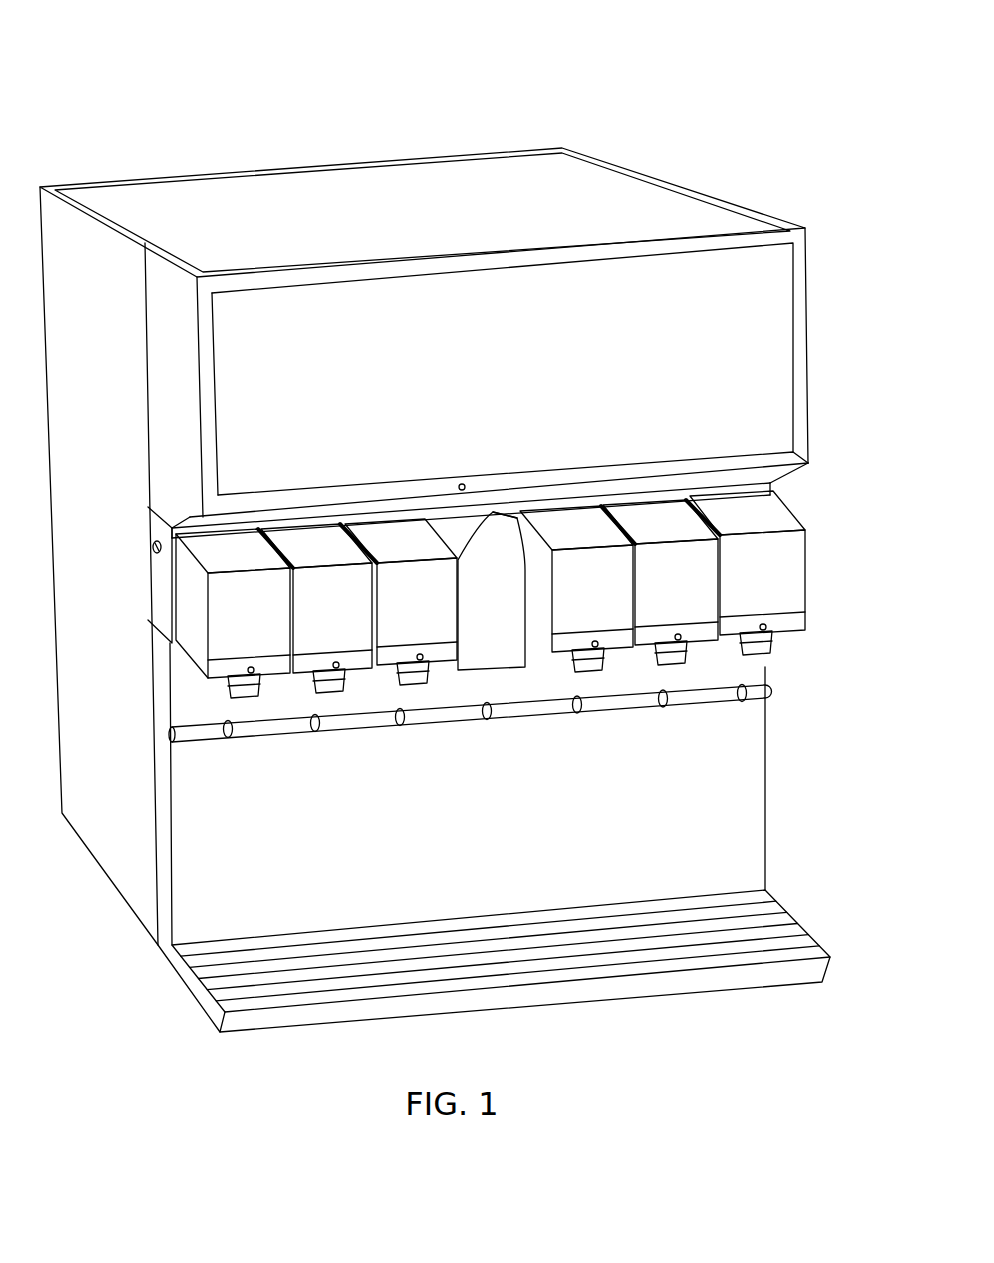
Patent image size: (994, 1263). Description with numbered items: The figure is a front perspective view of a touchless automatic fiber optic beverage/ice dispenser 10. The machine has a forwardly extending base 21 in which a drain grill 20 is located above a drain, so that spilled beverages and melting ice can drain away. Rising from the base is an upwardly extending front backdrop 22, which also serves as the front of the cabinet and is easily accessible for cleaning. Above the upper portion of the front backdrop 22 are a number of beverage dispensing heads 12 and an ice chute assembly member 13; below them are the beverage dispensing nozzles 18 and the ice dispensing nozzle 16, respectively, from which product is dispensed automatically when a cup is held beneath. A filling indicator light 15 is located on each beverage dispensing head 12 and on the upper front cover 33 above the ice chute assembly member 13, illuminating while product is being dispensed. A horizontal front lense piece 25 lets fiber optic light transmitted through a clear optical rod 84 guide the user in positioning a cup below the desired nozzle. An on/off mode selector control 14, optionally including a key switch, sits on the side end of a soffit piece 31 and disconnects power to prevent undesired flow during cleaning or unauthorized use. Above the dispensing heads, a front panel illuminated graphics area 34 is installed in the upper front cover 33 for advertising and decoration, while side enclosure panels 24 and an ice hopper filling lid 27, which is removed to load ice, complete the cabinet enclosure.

The touchless automatic fiber optic beverage/ice dispenser 10 is at (642, 92).
The beverage dispensing head 12 is at (249, 552).
The ice chute assembly member 13 is at (463, 530).
The on/off mode selector control 14 is at (150, 548).
The filling indicator light 15 is at (253, 666).
The ice dispensing nozzle 16 is at (518, 669).
The beverage dispensing nozzle 18 is at (260, 684).
The drain grill 20 is at (790, 918).
The base 21 is at (661, 992).
The front backdrop 22 is at (768, 862).
The side enclosure panel 24 is at (123, 880).
The horizontal front lense piece 25 is at (192, 743).
The ice hopper filling lid 27 is at (433, 167).
The soffit piece 31 is at (162, 627).
The upper front cover 33 is at (800, 442).
The front panel illuminated graphics area 34 is at (782, 305).
The clear optical rod 84 is at (232, 738).